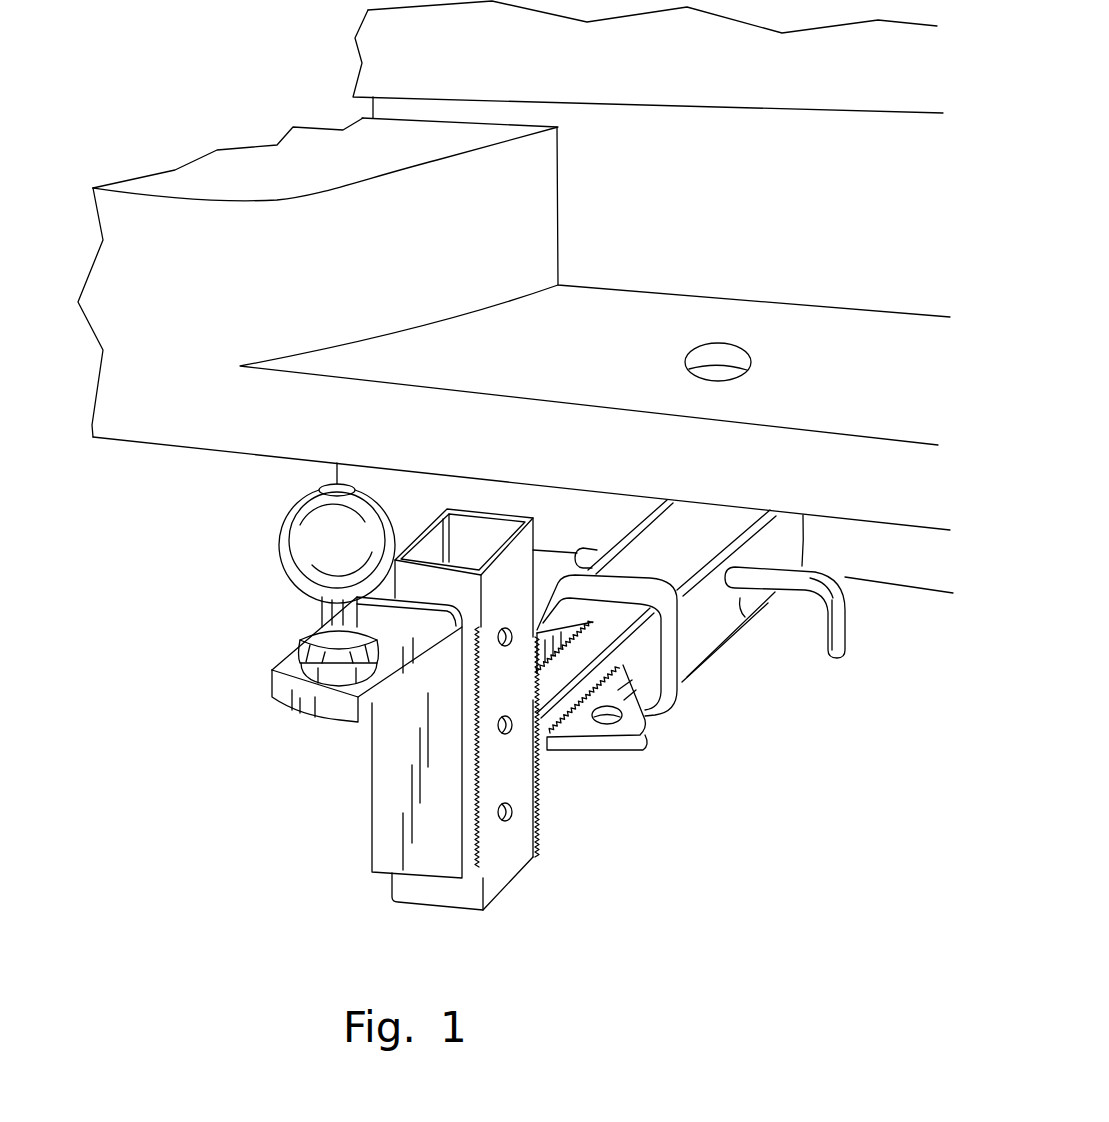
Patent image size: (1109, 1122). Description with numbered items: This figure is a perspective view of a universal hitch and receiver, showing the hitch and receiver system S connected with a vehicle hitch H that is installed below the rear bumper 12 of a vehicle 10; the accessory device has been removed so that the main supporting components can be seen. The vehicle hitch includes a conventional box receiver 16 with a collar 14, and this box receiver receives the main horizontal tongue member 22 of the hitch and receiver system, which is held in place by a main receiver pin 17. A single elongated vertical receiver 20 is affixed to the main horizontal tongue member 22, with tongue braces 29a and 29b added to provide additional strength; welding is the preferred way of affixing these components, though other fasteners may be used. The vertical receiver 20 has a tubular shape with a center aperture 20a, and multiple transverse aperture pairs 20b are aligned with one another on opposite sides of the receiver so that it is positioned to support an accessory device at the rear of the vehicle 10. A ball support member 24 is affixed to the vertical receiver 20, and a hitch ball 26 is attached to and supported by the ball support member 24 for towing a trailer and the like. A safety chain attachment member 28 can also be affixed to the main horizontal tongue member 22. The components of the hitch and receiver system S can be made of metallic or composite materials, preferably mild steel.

The vehicle 10 is at (228, 482).
The rear bumper 12 is at (240, 162).
The collar 14 is at (631, 580).
The conventional box receiver 16 is at (726, 611).
The main receiver pin 17 is at (838, 640).
The vehicle hitch H is at (778, 623).
The vertical receiver 20 is at (504, 870).
The center aperture 20a is at (488, 533).
The transverse aperture pairs 20b is at (506, 818).
The main horizontal tongue member 22 is at (562, 762).
The ball support member 24 is at (382, 733).
The hitch ball 26 is at (296, 542).
The safety chain attachment member 28 is at (632, 743).
The tongue brace 29a is at (565, 636).
The tongue brace 29b is at (548, 808).
The hitch and receiver system S is at (328, 813).